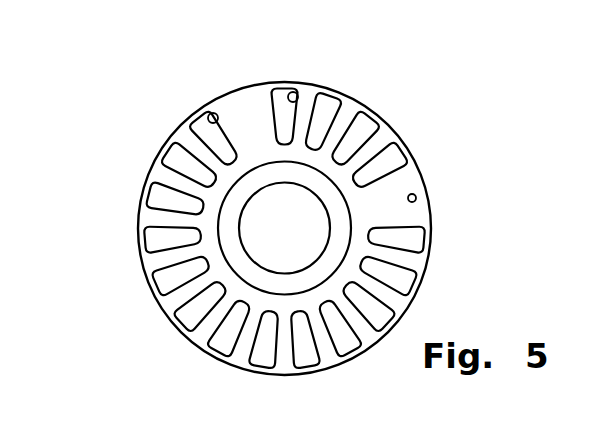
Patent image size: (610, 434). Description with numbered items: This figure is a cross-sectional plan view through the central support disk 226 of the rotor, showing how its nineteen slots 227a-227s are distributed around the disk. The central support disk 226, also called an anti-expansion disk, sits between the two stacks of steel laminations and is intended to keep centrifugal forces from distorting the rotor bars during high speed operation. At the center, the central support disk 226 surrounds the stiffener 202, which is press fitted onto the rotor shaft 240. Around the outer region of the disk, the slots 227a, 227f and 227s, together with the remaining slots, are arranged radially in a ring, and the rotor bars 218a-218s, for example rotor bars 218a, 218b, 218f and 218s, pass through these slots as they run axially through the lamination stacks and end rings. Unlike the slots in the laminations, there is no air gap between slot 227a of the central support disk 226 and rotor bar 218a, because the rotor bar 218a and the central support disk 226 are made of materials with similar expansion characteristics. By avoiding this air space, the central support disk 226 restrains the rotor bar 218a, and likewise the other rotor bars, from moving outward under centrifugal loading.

The stiffener 202 is at (267, 280).
The central support disk 226 is at (217, 270).
The rotor shaft 240 is at (307, 240).
The rotor bar 218a is at (288, 118).
The rotor bar 218b is at (367, 130).
The rotor bar 218f is at (403, 237).
The rotor bar 218s is at (212, 138).
The slot of central support disk 227a is at (294, 92).
The slot of central support disk 227s is at (215, 113).
The slot of central support disk 227f is at (416, 196).